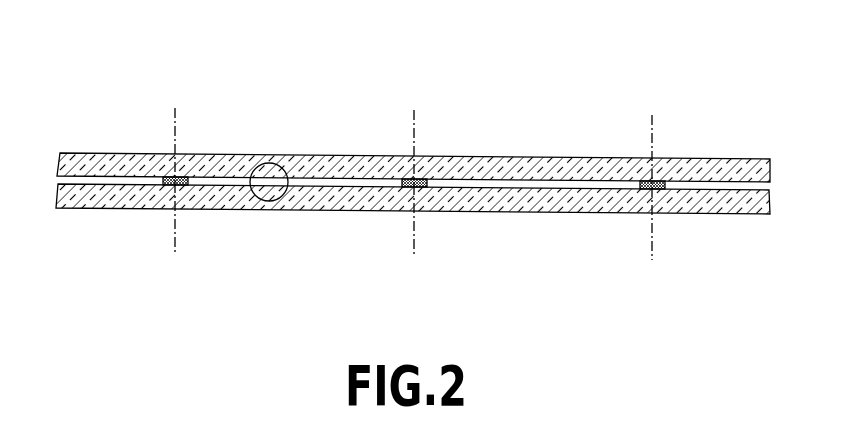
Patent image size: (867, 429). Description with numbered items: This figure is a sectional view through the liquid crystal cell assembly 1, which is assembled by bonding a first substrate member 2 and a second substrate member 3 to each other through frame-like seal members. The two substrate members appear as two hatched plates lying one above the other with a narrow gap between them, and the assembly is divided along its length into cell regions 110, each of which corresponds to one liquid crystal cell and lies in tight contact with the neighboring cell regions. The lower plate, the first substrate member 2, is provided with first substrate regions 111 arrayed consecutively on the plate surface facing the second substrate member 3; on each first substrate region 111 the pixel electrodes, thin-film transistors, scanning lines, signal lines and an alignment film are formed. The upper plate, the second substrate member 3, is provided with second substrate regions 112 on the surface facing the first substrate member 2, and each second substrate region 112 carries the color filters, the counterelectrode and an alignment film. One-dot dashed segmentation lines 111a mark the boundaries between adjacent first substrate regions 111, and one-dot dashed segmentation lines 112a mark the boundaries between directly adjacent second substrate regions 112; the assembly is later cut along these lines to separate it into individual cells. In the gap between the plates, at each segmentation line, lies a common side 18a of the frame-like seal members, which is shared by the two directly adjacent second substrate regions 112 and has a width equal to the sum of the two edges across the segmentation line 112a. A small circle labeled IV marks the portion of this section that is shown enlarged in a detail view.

The liquid crystal cell assembly 1 is at (91, 128).
The first substrate member 2 is at (757, 218).
The second substrate member 3 is at (755, 157).
The cell region 110 is at (271, 212).
The first substrate region 111 is at (82, 210).
The segmentation line 111a is at (176, 240).
The second substrate region 112 is at (121, 152).
The segmentation line 112a is at (177, 122).
The common side 18a is at (163, 187).
The detail view IV region IV is at (271, 153).